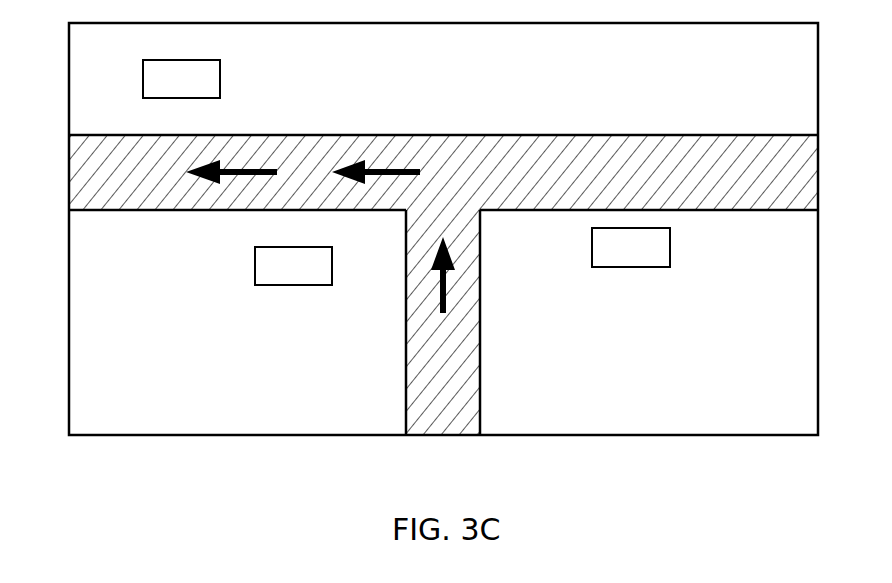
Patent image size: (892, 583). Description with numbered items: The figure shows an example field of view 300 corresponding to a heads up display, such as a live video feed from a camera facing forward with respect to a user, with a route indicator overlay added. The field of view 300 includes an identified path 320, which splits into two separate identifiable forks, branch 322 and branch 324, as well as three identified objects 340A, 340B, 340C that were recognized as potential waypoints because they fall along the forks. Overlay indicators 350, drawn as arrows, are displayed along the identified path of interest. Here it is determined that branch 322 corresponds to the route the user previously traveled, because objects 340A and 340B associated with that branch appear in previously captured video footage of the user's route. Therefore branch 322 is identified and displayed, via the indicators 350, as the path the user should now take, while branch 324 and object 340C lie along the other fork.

The field of view 300 is at (68, 248).
The path 320 is at (443, 322).
The path branch 322 is at (237, 172).
The path branch 324 is at (612, 172).
The object 340A is at (181, 79).
The object 340B is at (293, 266).
The object 340C is at (631, 247).
The overlay indicators 350 is at (385, 178).